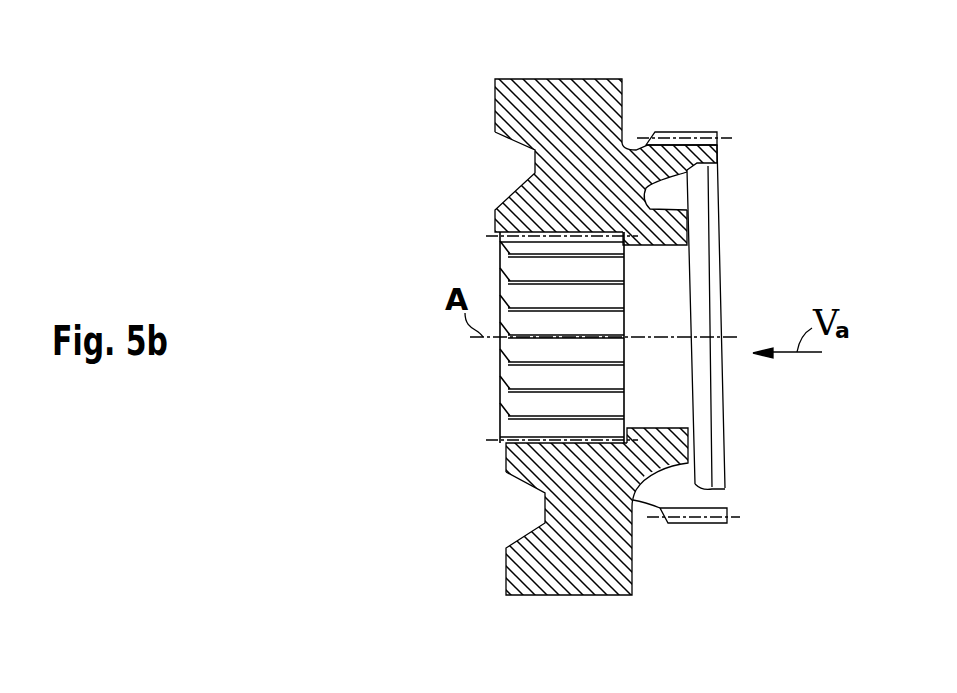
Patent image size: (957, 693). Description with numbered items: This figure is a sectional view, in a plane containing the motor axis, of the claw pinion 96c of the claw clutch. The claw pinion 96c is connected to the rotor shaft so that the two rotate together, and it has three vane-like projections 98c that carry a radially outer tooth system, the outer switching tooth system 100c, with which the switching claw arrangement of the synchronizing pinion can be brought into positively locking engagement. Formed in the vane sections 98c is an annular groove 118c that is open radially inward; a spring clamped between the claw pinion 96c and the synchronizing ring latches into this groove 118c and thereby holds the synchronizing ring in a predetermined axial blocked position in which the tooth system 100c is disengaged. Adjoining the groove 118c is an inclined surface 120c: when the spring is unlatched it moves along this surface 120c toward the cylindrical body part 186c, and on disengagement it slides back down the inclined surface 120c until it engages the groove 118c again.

The claw pinion 96c is at (580, 100).
The vane-like projections 98c is at (717, 148).
The outer switching tooth system 100c is at (688, 134).
The inclined surface 120c is at (662, 193).
The annular groove 118c is at (706, 485).
The cylindrical body part 186c is at (580, 572).